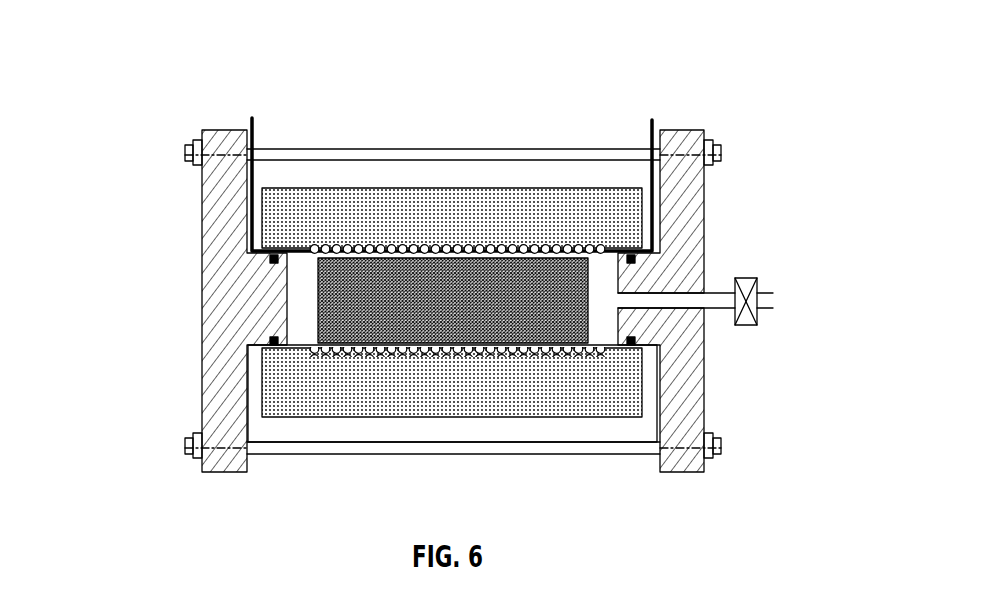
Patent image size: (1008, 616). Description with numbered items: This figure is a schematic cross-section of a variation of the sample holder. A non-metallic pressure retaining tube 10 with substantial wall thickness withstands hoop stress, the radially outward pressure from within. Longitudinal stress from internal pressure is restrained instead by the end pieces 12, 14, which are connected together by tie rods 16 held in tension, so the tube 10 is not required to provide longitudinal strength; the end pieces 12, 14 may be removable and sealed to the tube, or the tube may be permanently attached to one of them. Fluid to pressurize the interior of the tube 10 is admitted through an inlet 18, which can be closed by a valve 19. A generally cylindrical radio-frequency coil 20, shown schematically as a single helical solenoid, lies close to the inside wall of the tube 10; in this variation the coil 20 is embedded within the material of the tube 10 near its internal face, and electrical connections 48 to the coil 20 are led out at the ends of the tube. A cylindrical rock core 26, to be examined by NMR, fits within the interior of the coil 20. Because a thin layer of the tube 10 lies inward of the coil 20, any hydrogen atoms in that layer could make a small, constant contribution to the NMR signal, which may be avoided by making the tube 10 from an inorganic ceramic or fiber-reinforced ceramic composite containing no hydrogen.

The pressure retaining tube 10 is at (398, 200).
The end piece 12 is at (212, 242).
The end piece 14 is at (688, 378).
The tie rod 16 is at (300, 483).
The inlet 18 is at (772, 300).
The valve 19 is at (743, 278).
The radio-frequency coil 20 is at (448, 241).
The rock core 26 is at (413, 326).
The electrical connections 48 is at (293, 113).